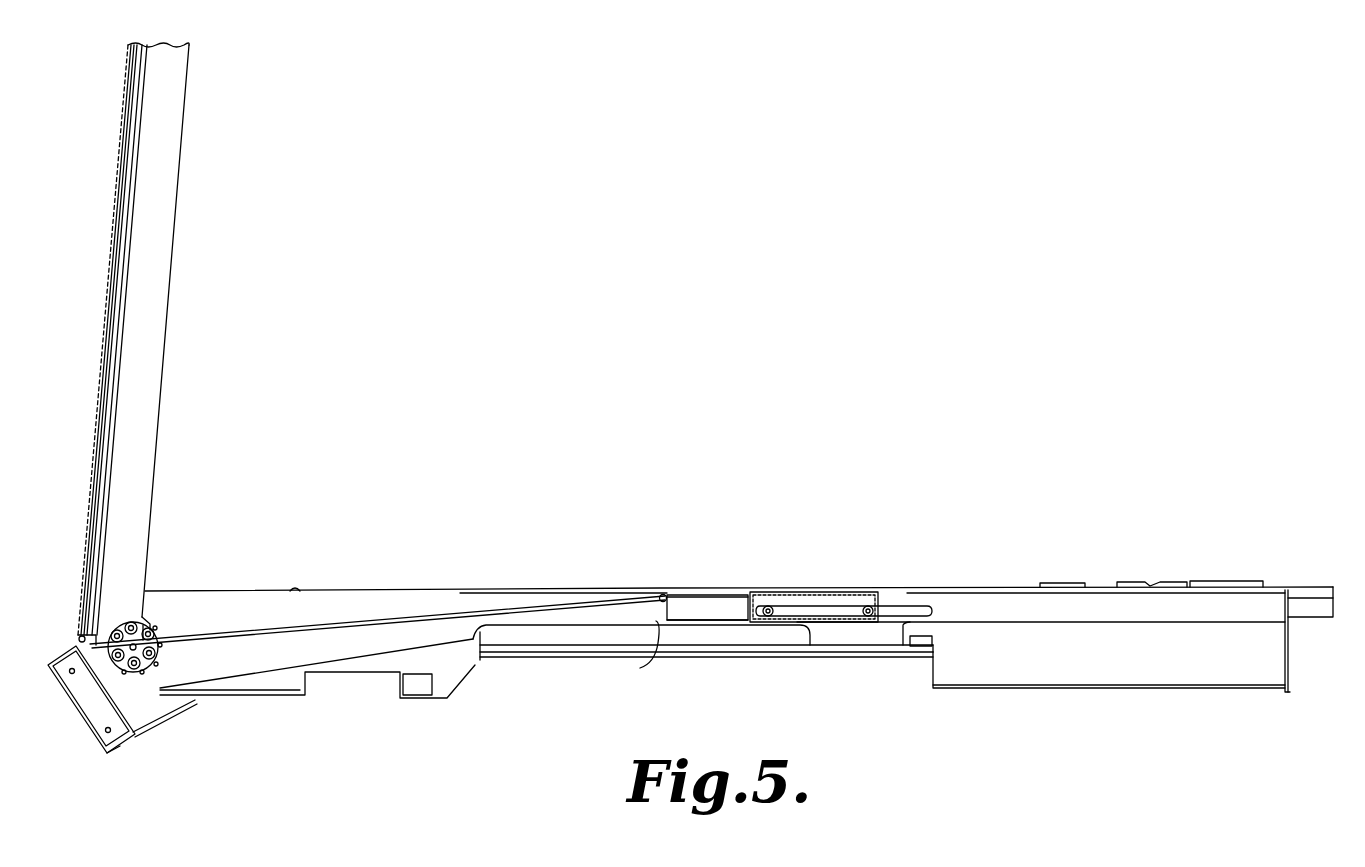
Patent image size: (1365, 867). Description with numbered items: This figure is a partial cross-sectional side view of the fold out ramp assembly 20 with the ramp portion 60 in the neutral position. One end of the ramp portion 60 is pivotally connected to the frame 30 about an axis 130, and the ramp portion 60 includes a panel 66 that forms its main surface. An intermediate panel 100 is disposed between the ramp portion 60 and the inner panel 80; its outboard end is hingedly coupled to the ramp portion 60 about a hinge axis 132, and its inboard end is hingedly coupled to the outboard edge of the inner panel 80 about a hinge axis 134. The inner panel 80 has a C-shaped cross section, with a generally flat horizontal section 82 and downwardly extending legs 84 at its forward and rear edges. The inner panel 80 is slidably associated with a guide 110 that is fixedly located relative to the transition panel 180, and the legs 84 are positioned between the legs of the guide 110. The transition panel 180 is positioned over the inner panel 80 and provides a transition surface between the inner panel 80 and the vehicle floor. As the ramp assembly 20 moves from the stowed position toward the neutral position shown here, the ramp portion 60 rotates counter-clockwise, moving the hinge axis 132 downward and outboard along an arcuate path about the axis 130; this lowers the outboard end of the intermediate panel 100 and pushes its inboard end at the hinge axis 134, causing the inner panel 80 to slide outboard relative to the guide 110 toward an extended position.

The ramp assembly 20 is at (876, 284).
The frame 30 is at (1290, 660).
The ramp portion 60 is at (200, 160).
The panel 66 is at (130, 270).
The inner panel 80 is at (728, 627).
The horizontal section 82 is at (712, 594).
The legs 84 is at (680, 652).
The intermediate panel 100 is at (270, 625).
The guide 110 is at (905, 631).
The axis 130 is at (117, 655).
The hinge axis 132 is at (80, 637).
The hinge axis 134 is at (661, 596).
The transition panel 180 is at (805, 595).